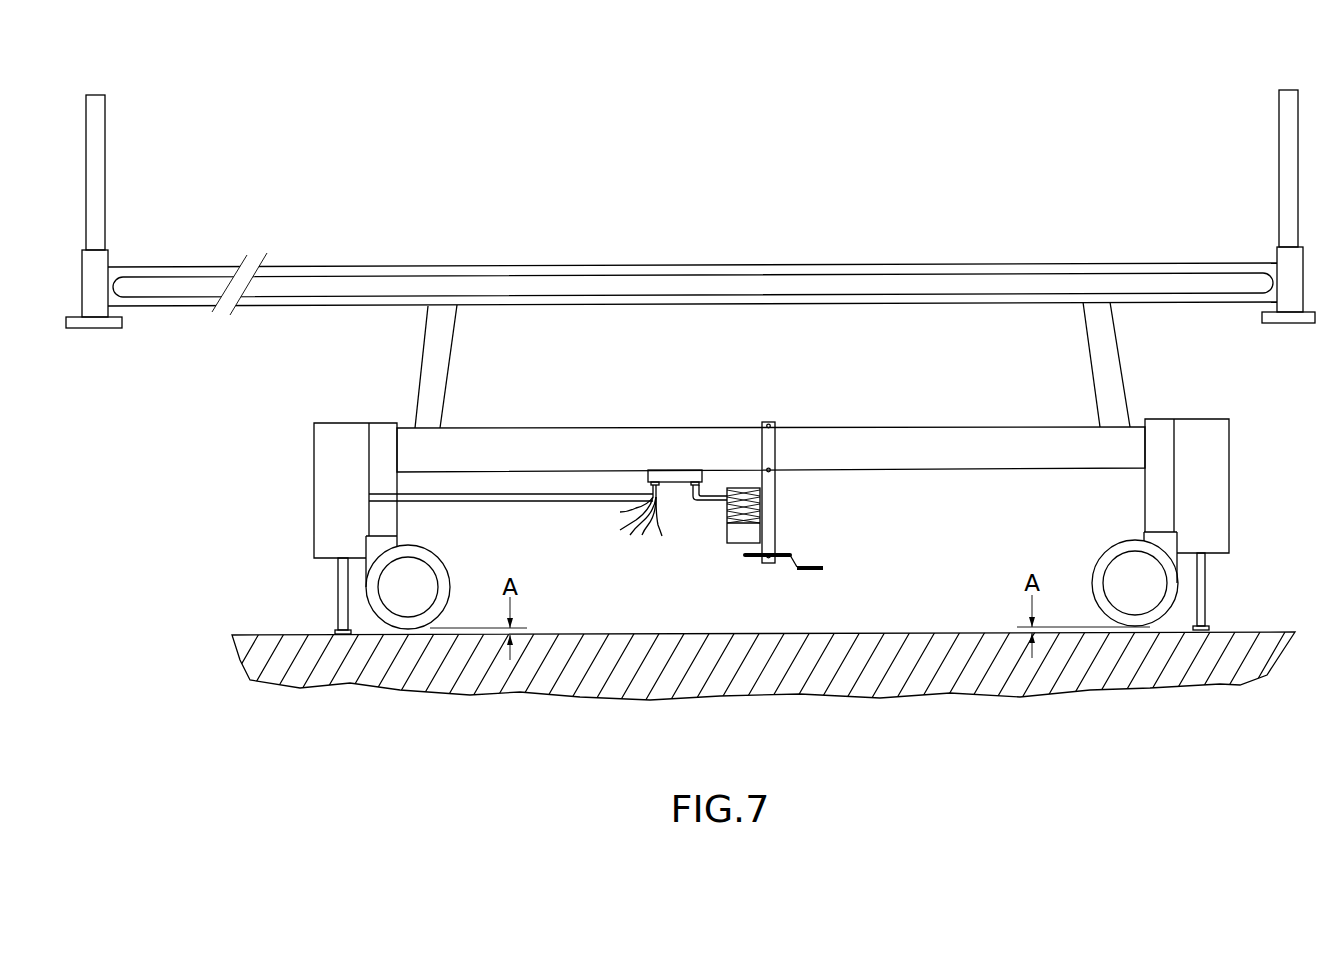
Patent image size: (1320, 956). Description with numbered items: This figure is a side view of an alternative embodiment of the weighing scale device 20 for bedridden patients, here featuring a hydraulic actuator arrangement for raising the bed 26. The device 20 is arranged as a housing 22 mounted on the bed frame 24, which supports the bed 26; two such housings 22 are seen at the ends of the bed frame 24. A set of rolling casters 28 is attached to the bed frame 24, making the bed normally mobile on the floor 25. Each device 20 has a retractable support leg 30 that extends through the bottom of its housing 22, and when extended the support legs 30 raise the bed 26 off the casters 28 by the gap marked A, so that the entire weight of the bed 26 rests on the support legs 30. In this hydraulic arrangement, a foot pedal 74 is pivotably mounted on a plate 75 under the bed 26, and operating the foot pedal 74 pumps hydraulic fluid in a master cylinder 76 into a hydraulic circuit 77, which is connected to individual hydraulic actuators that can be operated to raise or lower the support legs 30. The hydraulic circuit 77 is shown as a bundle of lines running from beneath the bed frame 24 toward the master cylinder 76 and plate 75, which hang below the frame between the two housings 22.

The weighing scale device 20 is at (288, 473).
The housing 22 is at (315, 513).
The bed frame 24 is at (820, 427).
The floor 25 is at (1237, 630).
The bed 26 is at (780, 222).
The rolling casters 28 is at (433, 550).
The support leg 30 is at (338, 582).
The foot pedal 74 is at (810, 563).
The plate 75 is at (780, 518).
The master cylinder 76 is at (732, 533).
The hydraulic circuit 77 is at (624, 536).